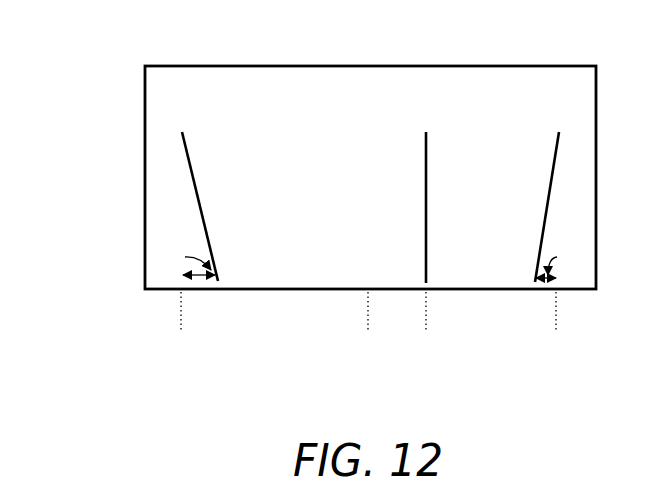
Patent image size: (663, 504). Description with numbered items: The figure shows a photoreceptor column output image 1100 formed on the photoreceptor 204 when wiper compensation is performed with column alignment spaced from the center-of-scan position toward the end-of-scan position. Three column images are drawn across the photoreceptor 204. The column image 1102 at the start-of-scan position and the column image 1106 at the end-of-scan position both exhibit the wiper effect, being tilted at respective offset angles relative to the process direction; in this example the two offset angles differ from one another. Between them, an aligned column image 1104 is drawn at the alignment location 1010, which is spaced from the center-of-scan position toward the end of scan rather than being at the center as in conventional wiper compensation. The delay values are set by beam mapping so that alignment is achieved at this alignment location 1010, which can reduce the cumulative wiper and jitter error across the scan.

The photoreceptor column output image 1100 is at (322, 200).
The photoreceptor 204 is at (145, 91).
The column image at the SOS position 1102 is at (198, 187).
The aligned column image 1104 is at (426, 143).
The column image at the EOS position 1106 is at (545, 213).
The alignment location 1010 is at (426, 309).